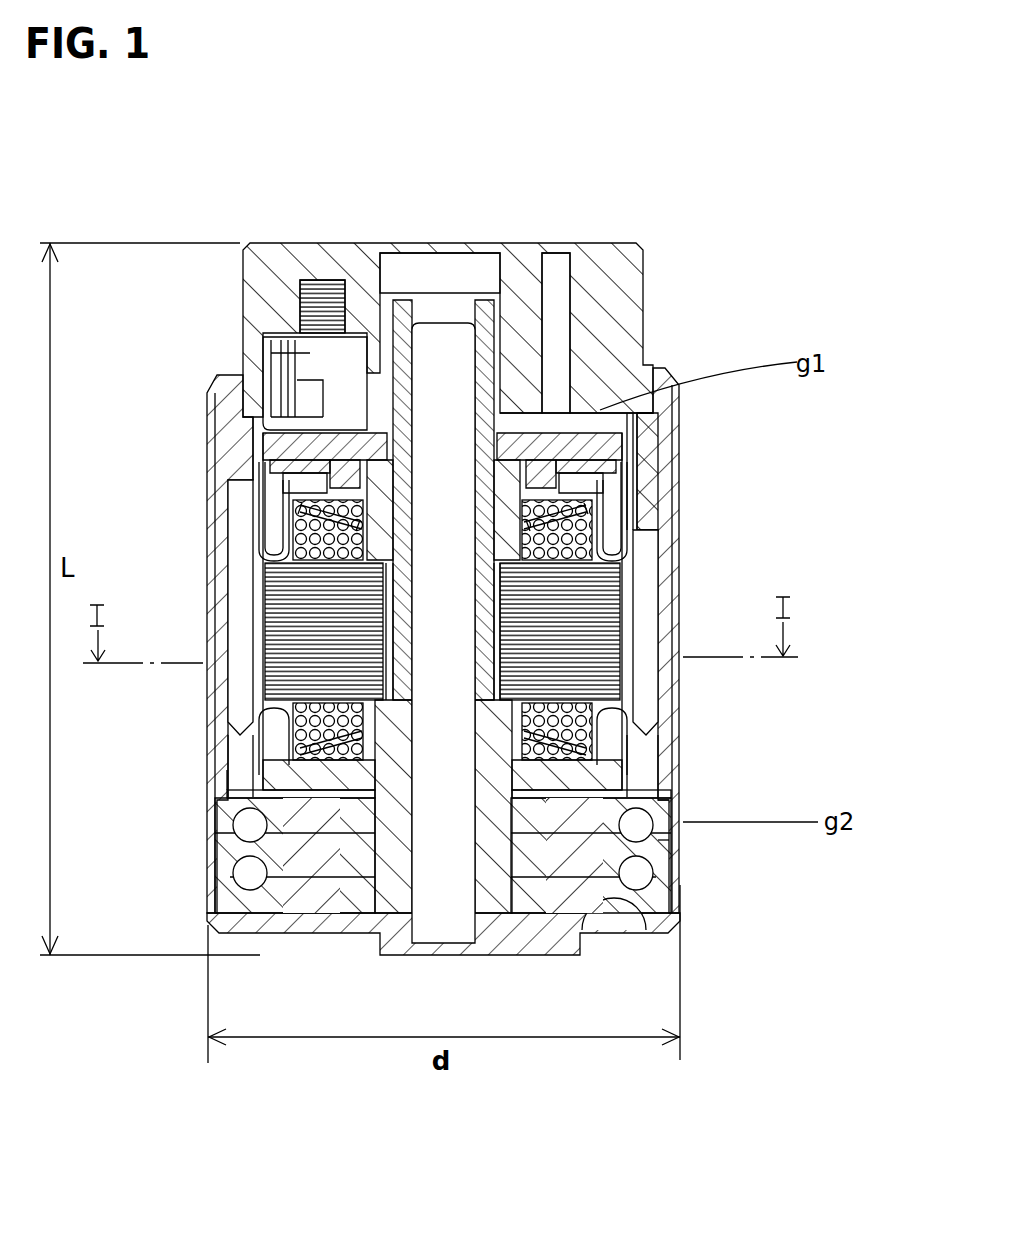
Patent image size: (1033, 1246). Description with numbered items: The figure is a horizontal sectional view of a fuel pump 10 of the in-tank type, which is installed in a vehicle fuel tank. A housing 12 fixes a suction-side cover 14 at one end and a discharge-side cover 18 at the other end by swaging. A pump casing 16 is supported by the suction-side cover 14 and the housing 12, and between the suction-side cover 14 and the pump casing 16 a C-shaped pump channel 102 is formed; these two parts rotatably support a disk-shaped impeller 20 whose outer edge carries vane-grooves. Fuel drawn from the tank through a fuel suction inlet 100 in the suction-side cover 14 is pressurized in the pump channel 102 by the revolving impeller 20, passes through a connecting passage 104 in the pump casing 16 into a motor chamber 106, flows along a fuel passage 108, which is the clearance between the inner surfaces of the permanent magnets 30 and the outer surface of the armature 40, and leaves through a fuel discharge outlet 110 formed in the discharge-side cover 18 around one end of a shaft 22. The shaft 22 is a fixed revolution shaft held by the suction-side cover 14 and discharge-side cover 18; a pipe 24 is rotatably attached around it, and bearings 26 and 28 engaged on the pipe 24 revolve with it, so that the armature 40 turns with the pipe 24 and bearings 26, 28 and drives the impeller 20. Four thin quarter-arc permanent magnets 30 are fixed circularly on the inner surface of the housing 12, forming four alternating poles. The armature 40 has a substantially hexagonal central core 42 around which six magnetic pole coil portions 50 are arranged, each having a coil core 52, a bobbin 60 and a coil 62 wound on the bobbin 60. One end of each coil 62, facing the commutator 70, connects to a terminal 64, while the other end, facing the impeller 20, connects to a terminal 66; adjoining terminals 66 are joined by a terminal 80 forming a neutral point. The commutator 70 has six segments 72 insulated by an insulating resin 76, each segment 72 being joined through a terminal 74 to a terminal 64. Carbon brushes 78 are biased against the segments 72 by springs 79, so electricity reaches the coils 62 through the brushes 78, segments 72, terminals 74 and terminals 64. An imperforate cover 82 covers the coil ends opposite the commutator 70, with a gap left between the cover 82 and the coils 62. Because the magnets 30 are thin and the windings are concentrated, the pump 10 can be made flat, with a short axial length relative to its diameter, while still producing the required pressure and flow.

The fuel pump 10 is at (626, 223).
The housing 12 is at (680, 888).
The suction-side cover 14 is at (303, 900).
The pump casing 16 is at (213, 833).
The discharge-side cover 18 is at (613, 272).
The impeller 20 is at (343, 870).
The shaft 22 is at (445, 920).
The pipe 24 is at (538, 915).
The bearing 26 is at (397, 870).
The bearing 28 is at (404, 243).
The permanent magnets 30 is at (243, 627).
The armature 40 is at (247, 753).
The central core 42 is at (513, 620).
The magnetic pole coil portion 50 is at (288, 500).
The coil core 52 is at (262, 693).
The bobbin 60 is at (263, 543).
The coil 62 is at (253, 420).
The terminal 64 is at (265, 503).
The terminal 66 is at (232, 795).
The commutator 70 is at (548, 380).
The segment 72 is at (232, 388).
The terminal 74 is at (268, 468).
The insulating resin 76 is at (545, 440).
The brush 78 is at (330, 355).
The spring 79 is at (327, 278).
The terminal 80 is at (262, 763).
The cover 82 is at (268, 868).
The fuel suction inlet 100 is at (612, 935).
The pump channel 102 is at (670, 846).
The connecting passage 104 is at (668, 812).
The motor chamber 106 is at (647, 747).
The fuel passage 108 is at (262, 645).
The fuel discharge outlet 110 is at (577, 327).